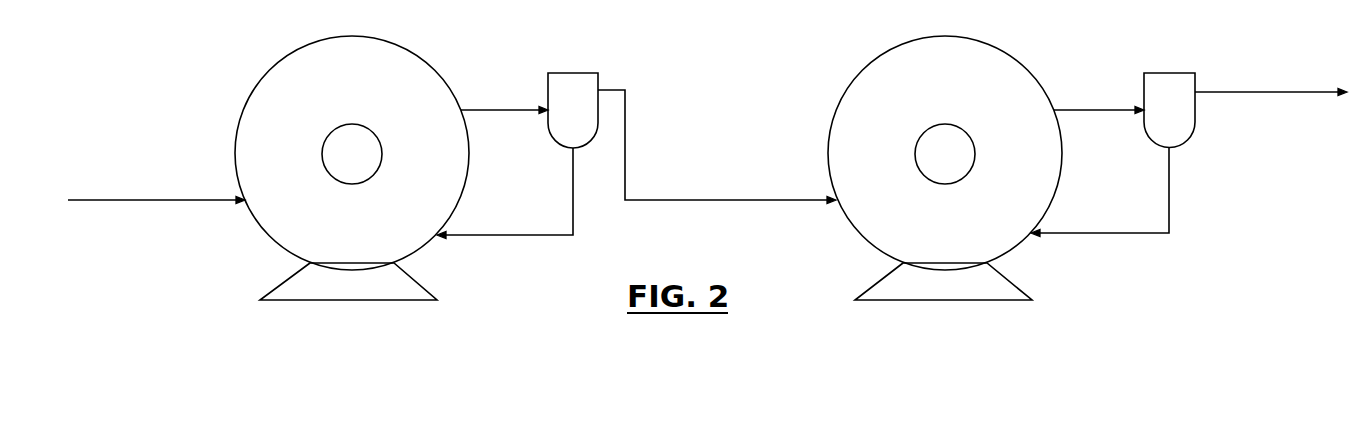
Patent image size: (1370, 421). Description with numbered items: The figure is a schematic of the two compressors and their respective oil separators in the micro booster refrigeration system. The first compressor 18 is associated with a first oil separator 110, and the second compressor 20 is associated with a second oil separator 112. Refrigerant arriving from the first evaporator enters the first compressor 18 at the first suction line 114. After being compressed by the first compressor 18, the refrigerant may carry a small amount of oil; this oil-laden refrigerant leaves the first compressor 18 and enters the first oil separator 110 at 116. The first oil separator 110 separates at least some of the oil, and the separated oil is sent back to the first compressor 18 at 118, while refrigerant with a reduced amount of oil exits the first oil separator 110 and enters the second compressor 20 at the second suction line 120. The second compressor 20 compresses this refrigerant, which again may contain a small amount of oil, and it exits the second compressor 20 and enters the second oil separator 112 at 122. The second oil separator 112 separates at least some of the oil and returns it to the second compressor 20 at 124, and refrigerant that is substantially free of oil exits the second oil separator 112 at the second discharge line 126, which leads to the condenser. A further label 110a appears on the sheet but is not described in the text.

The first compressor 18 is at (437, 72).
The second compressor 20 is at (1033, 73).
The first oil separator 110 is at (575, 73).
The separator component 110a is at (172, 420).
The second oil separator 112 is at (1170, 73).
The first suction line 114 is at (120, 200).
The first compressor outlet to first oil separator 116 is at (465, 235).
The oil return to first compressor 118 is at (475, 110).
The second suction line 120 is at (718, 200).
The second compressor outlet to second oil separator 122 is at (1078, 110).
The oil return to second compressor 124 is at (1068, 233).
The second discharge line 126 is at (1267, 92).